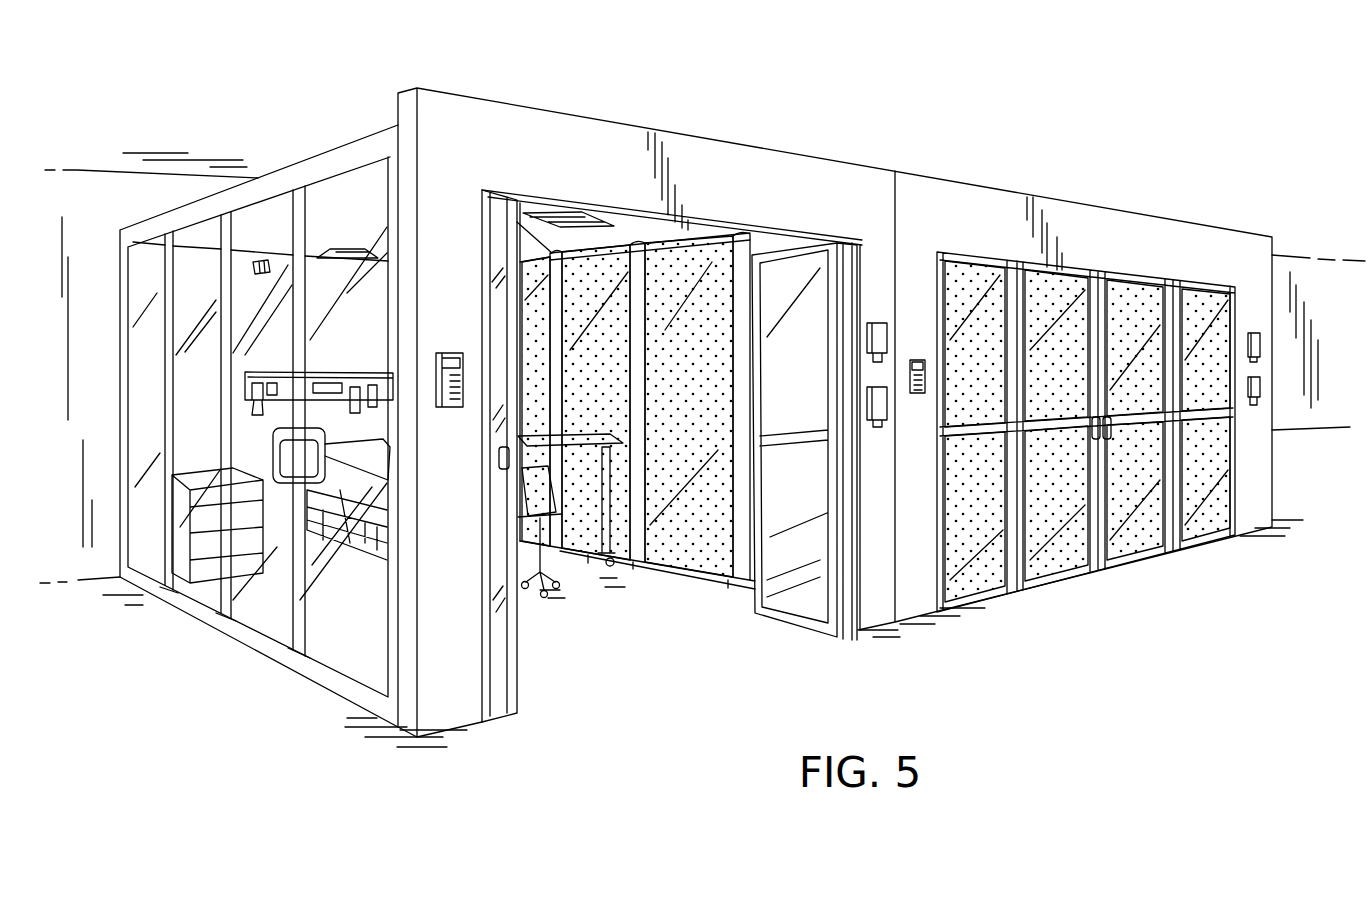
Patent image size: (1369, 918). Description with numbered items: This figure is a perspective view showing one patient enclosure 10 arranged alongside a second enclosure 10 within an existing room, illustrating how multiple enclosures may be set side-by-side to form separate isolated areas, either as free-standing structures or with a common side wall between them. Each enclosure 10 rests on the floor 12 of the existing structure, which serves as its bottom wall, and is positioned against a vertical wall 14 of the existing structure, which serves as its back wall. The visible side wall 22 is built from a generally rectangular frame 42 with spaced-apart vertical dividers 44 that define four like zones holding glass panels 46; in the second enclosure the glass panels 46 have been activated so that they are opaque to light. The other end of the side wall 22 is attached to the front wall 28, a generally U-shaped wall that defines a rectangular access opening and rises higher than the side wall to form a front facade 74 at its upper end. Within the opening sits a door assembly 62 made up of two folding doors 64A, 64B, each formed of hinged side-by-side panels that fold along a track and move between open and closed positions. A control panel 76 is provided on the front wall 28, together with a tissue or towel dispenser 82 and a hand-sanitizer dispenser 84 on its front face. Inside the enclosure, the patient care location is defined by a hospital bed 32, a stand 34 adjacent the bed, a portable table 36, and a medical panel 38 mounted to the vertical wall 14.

The enclosure 10 is at (585, 92).
The floor 12 is at (253, 710).
The vertical wall 14 is at (83, 196).
The side wall 22 is at (190, 196).
The front wall 28 is at (688, 128).
The hospital bed 32 is at (540, 517).
The stand 34 is at (204, 553).
The portable table 36 is at (582, 462).
The medical panel 38 is at (340, 375).
The frame 42 is at (266, 177).
The vertical dividers 44 is at (165, 303).
The glass panels 46 is at (326, 193).
The door assembly 62 is at (1121, 580).
The folding door 64A is at (527, 668).
The folding door 64B is at (806, 641).
The front facade 74 is at (750, 167).
The control panel 76 is at (443, 407).
The tissue or towel dispenser 82 is at (881, 321).
The hand-sanitizer dispenser 84 is at (888, 409).